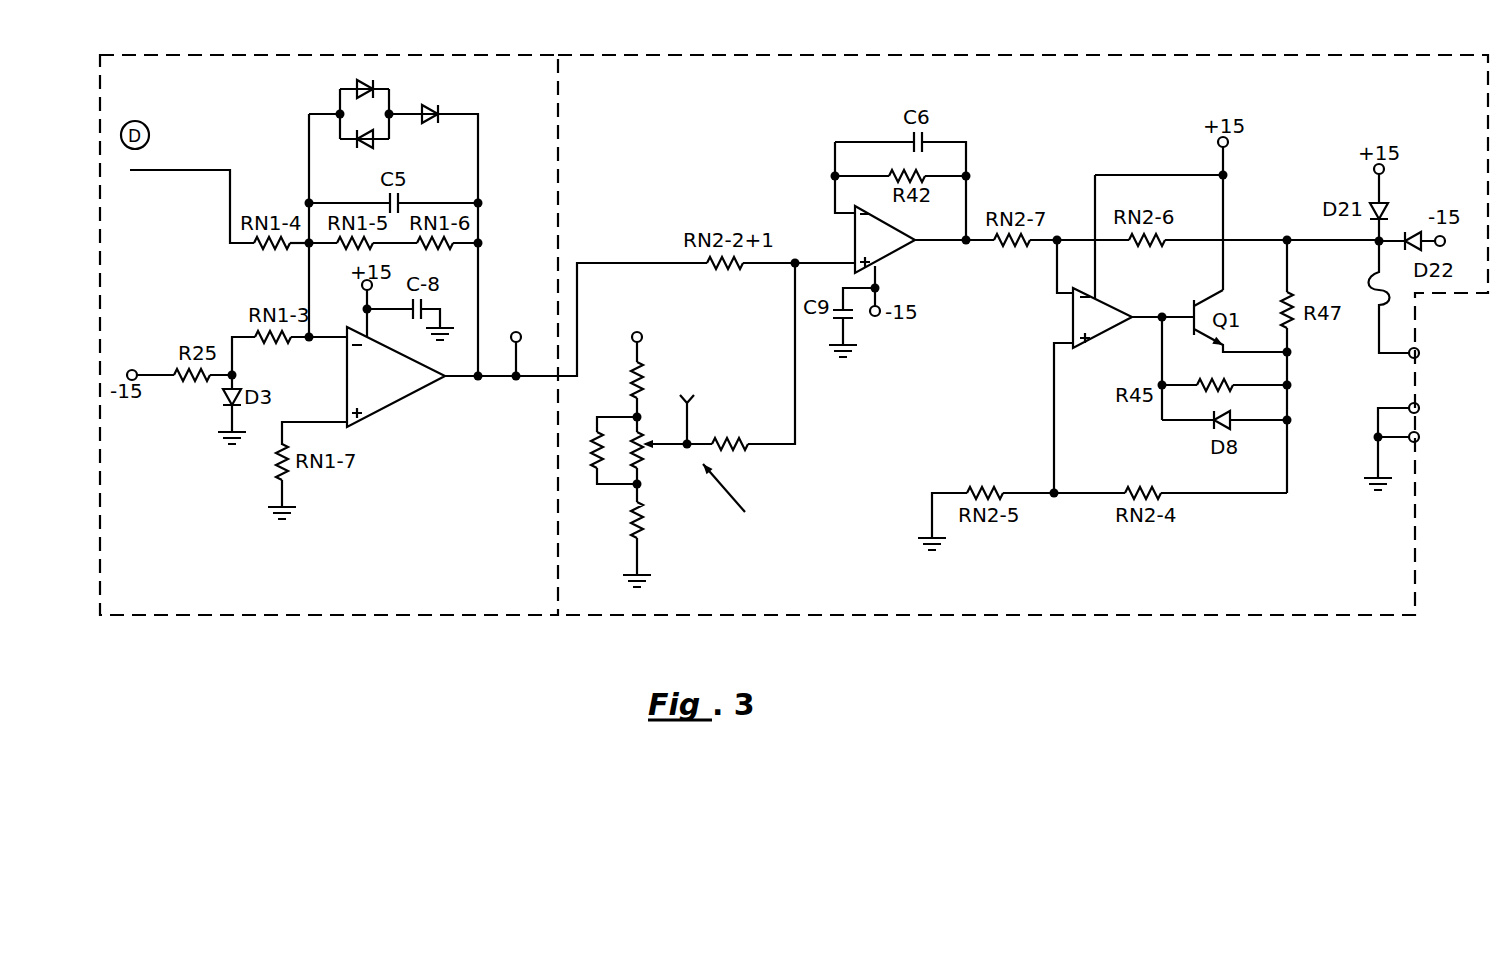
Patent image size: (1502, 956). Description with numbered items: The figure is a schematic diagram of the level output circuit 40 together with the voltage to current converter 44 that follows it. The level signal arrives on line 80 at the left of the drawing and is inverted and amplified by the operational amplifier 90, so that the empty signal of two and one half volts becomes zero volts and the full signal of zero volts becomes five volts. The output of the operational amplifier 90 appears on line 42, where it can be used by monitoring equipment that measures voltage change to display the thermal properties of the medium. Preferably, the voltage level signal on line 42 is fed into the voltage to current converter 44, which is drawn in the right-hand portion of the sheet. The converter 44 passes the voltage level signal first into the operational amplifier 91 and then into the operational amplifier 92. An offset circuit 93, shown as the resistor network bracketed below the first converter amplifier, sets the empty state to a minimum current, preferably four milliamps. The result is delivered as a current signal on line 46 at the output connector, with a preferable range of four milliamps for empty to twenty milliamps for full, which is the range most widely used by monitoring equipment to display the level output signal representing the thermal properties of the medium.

The output circuit 40 is at (366, 618).
The line 42 is at (519, 298).
The voltage to current converter 44 is at (986, 618).
The line 46 is at (1426, 354).
The line 80 is at (186, 171).
The operational amplifier 90 is at (383, 410).
The operational amplifier 91 is at (884, 244).
The operational amplifier 92 is at (1073, 307).
The offset circuit 93 is at (808, 370).